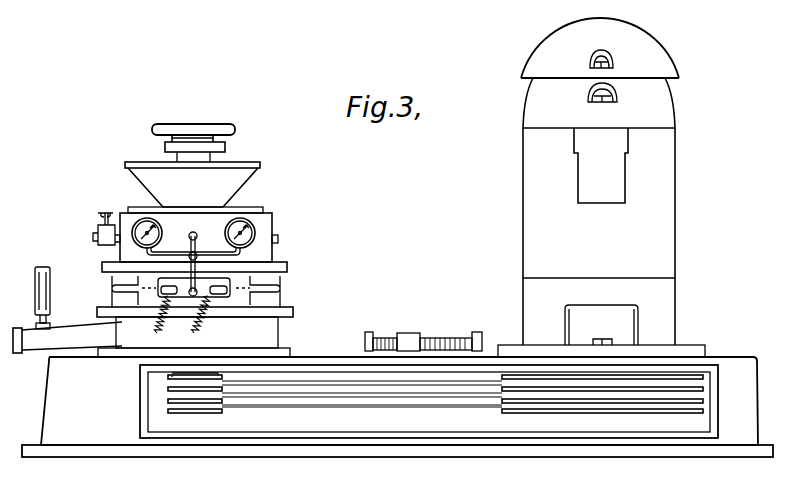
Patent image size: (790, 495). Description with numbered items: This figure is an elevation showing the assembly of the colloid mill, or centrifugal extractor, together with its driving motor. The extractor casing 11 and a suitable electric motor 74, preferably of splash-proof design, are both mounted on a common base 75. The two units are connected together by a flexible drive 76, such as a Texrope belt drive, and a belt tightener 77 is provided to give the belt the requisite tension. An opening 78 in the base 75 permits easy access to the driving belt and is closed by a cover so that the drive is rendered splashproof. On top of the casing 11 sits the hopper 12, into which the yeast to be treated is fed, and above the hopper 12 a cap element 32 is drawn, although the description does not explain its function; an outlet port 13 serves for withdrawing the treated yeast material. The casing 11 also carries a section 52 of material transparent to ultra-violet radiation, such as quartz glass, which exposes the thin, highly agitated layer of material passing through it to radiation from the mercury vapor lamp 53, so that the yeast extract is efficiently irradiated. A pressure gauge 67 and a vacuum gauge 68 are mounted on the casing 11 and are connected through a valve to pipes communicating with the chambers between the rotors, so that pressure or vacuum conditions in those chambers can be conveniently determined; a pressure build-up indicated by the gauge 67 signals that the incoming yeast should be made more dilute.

The casing 11 is at (272, 253).
The hopper 12 is at (232, 180).
The outlet port 13 is at (62, 332).
The cap 32 is at (236, 128).
The section of transparent material 52 is at (267, 280).
The mercury vapor lamp 53 is at (262, 288).
The pressure gauge 67 is at (135, 213).
The vacuum gauge 68 is at (256, 227).
The electric motor 74 is at (676, 209).
The base 75 is at (70, 435).
The flexible drive 76 is at (360, 410).
The belt tightener 77 is at (445, 337).
The opening 78 is at (172, 420).